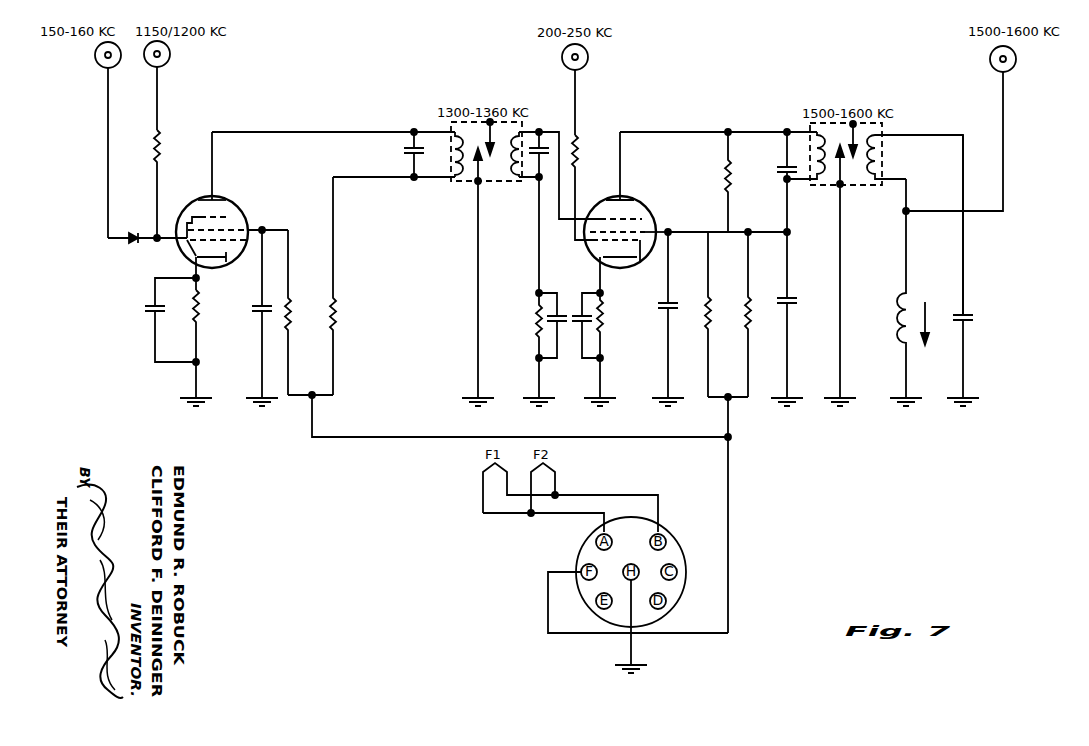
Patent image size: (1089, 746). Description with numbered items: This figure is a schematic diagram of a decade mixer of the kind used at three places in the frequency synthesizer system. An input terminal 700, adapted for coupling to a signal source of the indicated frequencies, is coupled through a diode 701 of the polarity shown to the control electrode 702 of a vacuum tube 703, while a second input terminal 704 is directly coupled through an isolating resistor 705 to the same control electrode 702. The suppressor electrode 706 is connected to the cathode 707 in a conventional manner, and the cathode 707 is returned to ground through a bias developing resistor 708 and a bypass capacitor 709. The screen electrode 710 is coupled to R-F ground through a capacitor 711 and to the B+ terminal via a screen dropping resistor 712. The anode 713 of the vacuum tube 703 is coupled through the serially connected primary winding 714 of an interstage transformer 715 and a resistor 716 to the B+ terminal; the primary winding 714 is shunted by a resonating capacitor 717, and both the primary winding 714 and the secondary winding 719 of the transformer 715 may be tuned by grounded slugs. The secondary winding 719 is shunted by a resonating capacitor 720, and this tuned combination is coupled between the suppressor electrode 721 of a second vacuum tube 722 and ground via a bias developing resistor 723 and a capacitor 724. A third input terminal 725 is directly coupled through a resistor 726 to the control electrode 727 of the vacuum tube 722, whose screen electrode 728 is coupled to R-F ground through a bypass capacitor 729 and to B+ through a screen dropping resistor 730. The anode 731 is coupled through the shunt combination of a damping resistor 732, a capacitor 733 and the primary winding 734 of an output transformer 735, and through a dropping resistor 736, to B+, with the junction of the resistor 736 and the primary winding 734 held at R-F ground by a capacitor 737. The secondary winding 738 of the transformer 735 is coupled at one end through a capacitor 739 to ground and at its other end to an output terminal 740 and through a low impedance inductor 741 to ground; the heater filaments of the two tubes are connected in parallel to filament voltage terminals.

The input terminal 700 is at (95, 52).
The diode 701 is at (128, 240).
The control electrode 702 is at (225, 258).
The vacuum tube 703 is at (227, 223).
The input terminal 704 is at (171, 60).
The isolating resistor 705 is at (160, 131).
The suppressor electrode 706 is at (238, 222).
The cathode 707 is at (216, 278).
The bias developing resistor 708 is at (195, 318).
The bypass capacitor 709 is at (150, 312).
The screen electrode 710 is at (200, 200).
The capacitor 711 is at (258, 316).
The screen dropping resistor 712 is at (291, 316).
The anode 713 is at (215, 197).
The primary winding 714 is at (462, 176).
The transformer 715 is at (475, 241).
The resistor 716 is at (340, 316).
The resonating capacitor 717 is at (406, 151).
The secondary winding 719 is at (512, 177).
The resonating capacitor 720 is at (540, 145).
The suppressor electrode 721 is at (600, 215).
The vacuum tube 722 is at (638, 212).
The bias developing resistor 723 is at (536, 318).
The capacitor 724 is at (557, 315).
The input terminal 725 is at (588, 58).
The resistor 726 is at (580, 146).
The control electrode 727 is at (641, 262).
The screen electrode 728 is at (645, 230).
The bypass capacitor 729 is at (668, 302).
The screen dropping resistor 730 is at (710, 298).
The anode 731 is at (622, 195).
The damping resistor 732 is at (731, 190).
The capacitor 733 is at (782, 172).
The primary winding 734 is at (820, 177).
The transformer 735 is at (853, 241).
The dropping resistor 736 is at (750, 298).
The capacitor 737 is at (789, 300).
The secondary winding 738 is at (878, 158).
The capacitor 739 is at (966, 316).
The output terminal 740 is at (1016, 60).
The low impedance inductor 741 is at (912, 295).